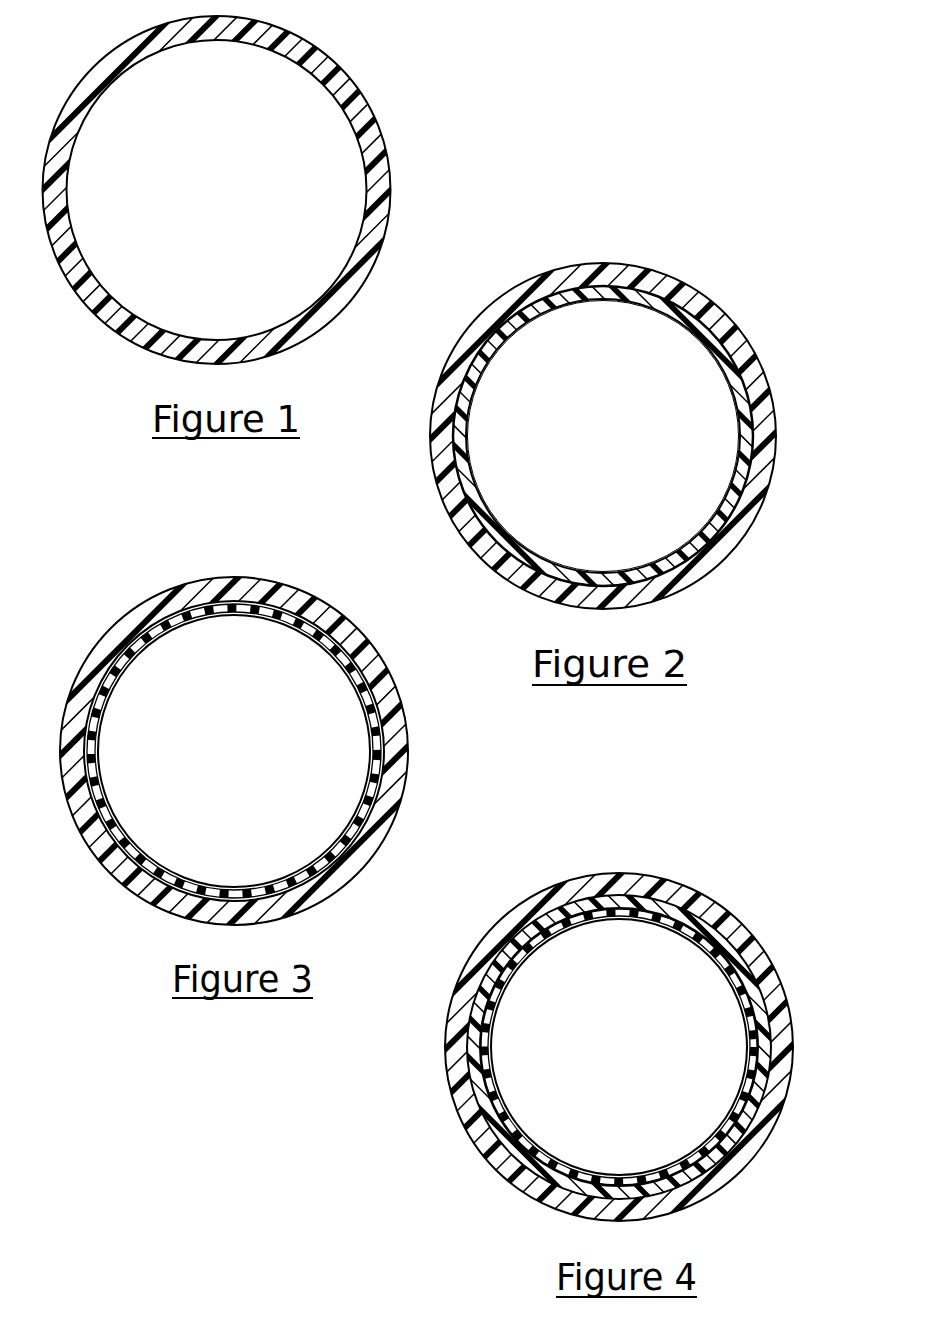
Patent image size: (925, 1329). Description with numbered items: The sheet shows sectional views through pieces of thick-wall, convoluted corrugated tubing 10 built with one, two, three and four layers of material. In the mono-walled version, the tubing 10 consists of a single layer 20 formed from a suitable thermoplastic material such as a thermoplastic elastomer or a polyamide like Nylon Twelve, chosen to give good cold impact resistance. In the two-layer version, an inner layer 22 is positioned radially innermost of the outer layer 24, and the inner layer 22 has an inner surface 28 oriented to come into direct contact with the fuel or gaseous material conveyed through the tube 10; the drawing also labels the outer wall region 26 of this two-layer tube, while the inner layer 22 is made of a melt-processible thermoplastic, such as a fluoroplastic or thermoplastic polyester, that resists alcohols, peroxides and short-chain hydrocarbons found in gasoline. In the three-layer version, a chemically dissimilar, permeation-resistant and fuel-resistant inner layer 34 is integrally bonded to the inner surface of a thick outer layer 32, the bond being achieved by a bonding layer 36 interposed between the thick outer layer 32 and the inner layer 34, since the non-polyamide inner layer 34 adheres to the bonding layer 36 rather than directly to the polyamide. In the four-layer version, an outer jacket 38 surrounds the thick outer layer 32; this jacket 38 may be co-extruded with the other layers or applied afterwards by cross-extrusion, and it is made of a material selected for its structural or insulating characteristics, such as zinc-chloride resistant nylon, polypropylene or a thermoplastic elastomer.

In FIG. 1, the corrugated tubing 10 is at (249, 213).
In FIG. 2, the corrugated tubing 10 is at (603, 426).
In FIG. 3, the corrugated tubing 10 is at (235, 751).
In FIG. 4, the corrugated tubing 10 is at (612, 1046).
In FIG. 1, the single layer 20 is at (338, 84).
In FIG. 2, the inner layer 22 is at (553, 572).
In FIG. 2, the outer layer 24 is at (712, 298).
In FIG. 2, the outer layer 26 is at (750, 363).
In FIG. 2, the inner surface 28 is at (477, 492).
In FIG. 3, the thick outer layer 32 is at (102, 857).
In FIG. 4, the thick outer layer 32 is at (760, 1067).
In FIG. 3, the inner layer 34 is at (123, 838).
In FIG. 4, the inner layer 34 is at (582, 1163).
In FIG. 3, the bonding layer 36 is at (391, 725).
In FIG. 4, the bonding layer 36 is at (758, 985).
In FIG. 4, the outer jacket 38 is at (455, 1047).